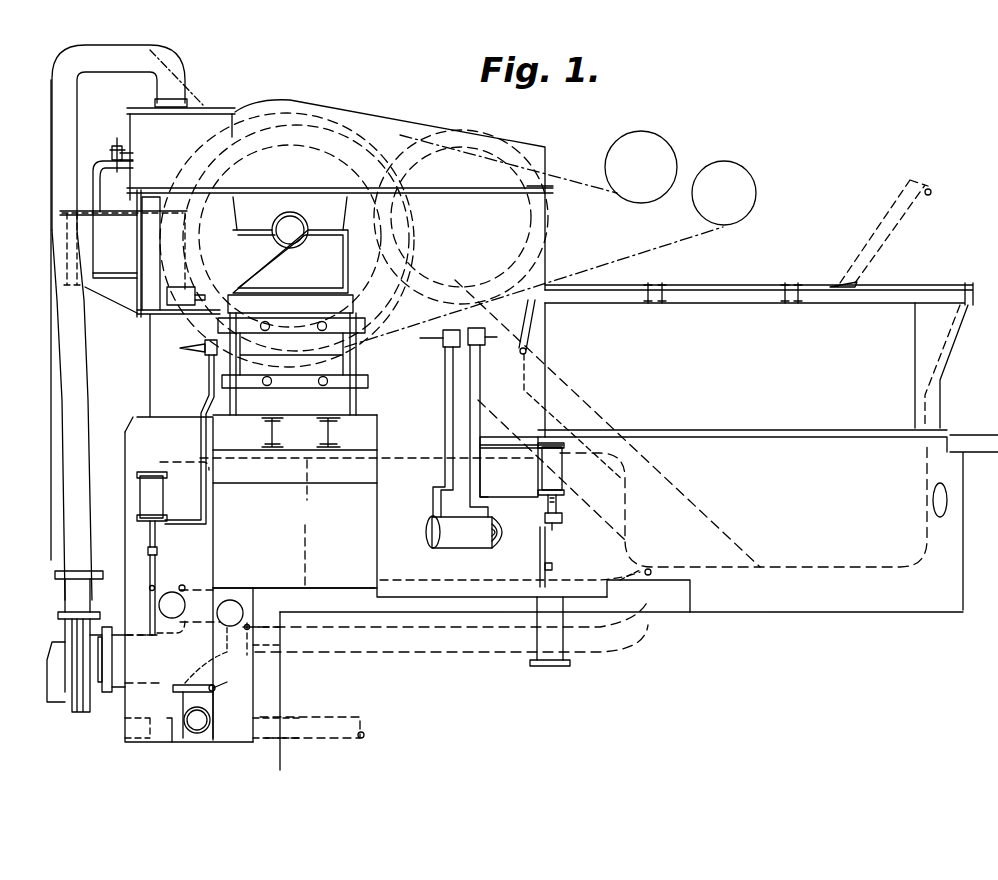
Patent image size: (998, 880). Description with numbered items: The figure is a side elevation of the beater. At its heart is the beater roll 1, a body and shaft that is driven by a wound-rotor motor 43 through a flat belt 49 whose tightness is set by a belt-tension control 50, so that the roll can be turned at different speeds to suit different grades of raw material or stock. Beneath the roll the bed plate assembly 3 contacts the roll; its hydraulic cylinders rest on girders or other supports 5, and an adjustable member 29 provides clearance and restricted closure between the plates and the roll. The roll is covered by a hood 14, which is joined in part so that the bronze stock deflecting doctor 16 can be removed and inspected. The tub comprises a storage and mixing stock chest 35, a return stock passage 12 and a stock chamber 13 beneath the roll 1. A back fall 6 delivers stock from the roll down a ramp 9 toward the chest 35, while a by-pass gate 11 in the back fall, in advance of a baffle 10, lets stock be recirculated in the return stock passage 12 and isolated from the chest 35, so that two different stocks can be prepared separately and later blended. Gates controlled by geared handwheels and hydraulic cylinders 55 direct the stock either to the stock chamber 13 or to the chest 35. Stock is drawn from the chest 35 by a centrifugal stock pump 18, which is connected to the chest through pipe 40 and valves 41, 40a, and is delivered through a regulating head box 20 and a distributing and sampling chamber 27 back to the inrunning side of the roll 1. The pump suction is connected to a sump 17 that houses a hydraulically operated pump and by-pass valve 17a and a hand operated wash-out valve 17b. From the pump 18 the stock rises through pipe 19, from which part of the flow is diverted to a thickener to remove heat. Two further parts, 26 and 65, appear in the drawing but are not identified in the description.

The beater roll 1 is at (263, 152).
The bed plate assembly 3 is at (222, 283).
The girders or supports 5 is at (262, 433).
The back fall 6 is at (377, 272).
The ramp 9 is at (455, 280).
The baffle 10 is at (405, 204).
The by-pass gate 11 is at (537, 325).
The return stock passage 12 is at (491, 410).
The stock chamber 13 is at (366, 578).
The hood 14 is at (425, 128).
The bronze stock deflecting doctor 16 is at (165, 253).
The sump 17 is at (257, 700).
The hydraulically operated pump and by-pass valve 17a is at (184, 588).
The hand operated wash-out valve 17b is at (188, 685).
The centrifugal stock pump 18 is at (75, 700).
The pipe 19 is at (78, 405).
The regulating head box 20 is at (133, 132).
The valve 26 is at (96, 160).
The distributing and sampling chamber 27 is at (123, 253).
The adjustable member 29 is at (172, 405).
The storage and mixing stock chest 35 is at (925, 473).
The pipe 40 is at (410, 652).
The valve 40a is at (632, 572).
The valve 41 is at (294, 621).
The wound-rotor motor 43 is at (720, 165).
The flat belt 49 is at (592, 268).
The belt-tension control 50 is at (650, 138).
The hydraulic cylinders 55 is at (153, 495).
The cylinder 65 is at (562, 474).